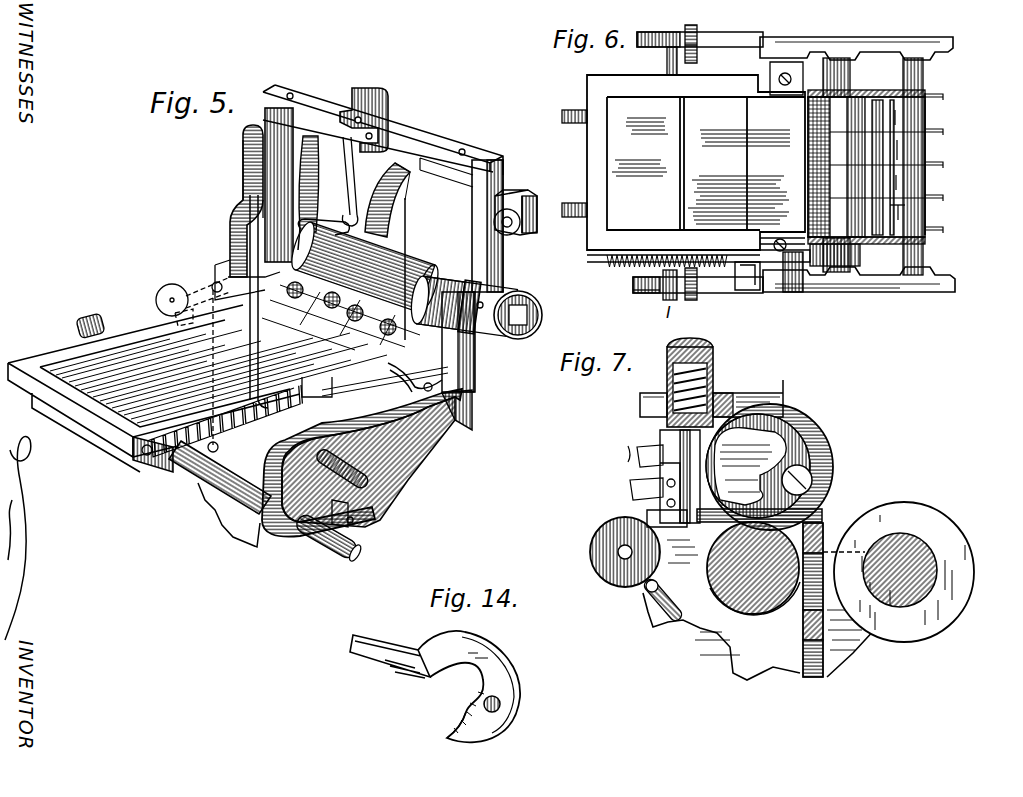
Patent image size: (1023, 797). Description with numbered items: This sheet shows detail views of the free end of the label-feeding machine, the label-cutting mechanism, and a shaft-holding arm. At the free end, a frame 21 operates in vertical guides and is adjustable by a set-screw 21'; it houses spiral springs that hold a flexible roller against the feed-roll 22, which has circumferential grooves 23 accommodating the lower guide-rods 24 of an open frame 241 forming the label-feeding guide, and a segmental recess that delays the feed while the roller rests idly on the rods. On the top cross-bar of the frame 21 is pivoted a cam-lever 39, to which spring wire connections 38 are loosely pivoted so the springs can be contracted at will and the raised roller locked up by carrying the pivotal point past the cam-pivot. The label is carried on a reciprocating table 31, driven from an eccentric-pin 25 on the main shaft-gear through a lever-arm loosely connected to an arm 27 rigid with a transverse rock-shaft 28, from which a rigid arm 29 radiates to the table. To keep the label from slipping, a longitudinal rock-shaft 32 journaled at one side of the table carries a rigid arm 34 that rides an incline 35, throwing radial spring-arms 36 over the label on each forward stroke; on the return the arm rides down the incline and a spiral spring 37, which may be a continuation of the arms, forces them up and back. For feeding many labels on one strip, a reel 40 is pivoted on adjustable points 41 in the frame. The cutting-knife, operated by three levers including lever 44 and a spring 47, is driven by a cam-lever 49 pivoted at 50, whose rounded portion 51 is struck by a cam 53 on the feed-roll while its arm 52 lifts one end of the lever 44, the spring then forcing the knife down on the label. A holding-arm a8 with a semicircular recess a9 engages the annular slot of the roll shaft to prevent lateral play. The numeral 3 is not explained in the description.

In FIG. 5, the bar 3 is at (262, 217).
In FIG. 5, the frame 21 is at (383, 238).
In FIG. 5, the set-screw 21' is at (518, 216).
In FIG. 5, the feed-roll 22 is at (228, 262).
In FIG. 5, the circumferential grooves 23 is at (475, 360).
In FIG. 6, the lower guide-rods 24 is at (870, 212).
In FIG. 6, the open frame 241 is at (926, 185).
In FIG. 7, the eccentric-pin 25 is at (649, 590).
In FIG. 5, the arm 27 is at (212, 170).
In FIG. 5, the transverse rock-shaft 28 is at (247, 480).
In FIG. 6, the transverse rock-shaft 28 is at (898, 215).
In FIG. 5, the rigid arm 29 is at (182, 467).
In FIG. 5, the table 31 is at (197, 375).
In FIG. 6, the table 31 is at (683, 162).
In FIG. 5, the longitudinal rock-shaft 32 is at (140, 457).
In FIG. 6, the longitudinal rock-shaft 32 is at (696, 264).
In FIG. 5, the rigid arm 34 is at (452, 430).
In FIG. 6, the rigid arm 34 is at (785, 294).
In FIG. 5, the incline 35 is at (472, 385).
In FIG. 6, the incline 35 is at (752, 292).
In FIG. 5, the radial spring-arms 36 is at (246, 248).
In FIG. 6, the radial spring-arms 36 is at (701, 171).
In FIG. 5, the spiral spring 37 is at (200, 477).
In FIG. 6, the spiral spring 37 is at (648, 292).
In FIG. 5, the spring wire connections 38 is at (342, 222).
In FIG. 5, the cam-lever 39 is at (378, 153).
In FIG. 7, the reel 40 is at (896, 589).
In FIG. 5, the adjustable points 41 is at (382, 497).
In FIG. 6, the adjustable points 41 is at (698, 165).
In FIG. 7, the lever 44 is at (786, 384).
In FIG. 7, the spring 47 is at (714, 390).
In FIG. 7, the cam-lever 49 is at (807, 443).
In FIG. 7, the pivot 50 is at (833, 473).
In FIG. 7, the rounded portion 51 is at (833, 497).
In FIG. 7, the arm 52 is at (662, 436).
In FIG. 7, the cam 53 is at (795, 628).
In FIG. 14, the holding-arm a8 is at (436, 690).
In FIG. 14, the semicircular recess a9 is at (453, 708).